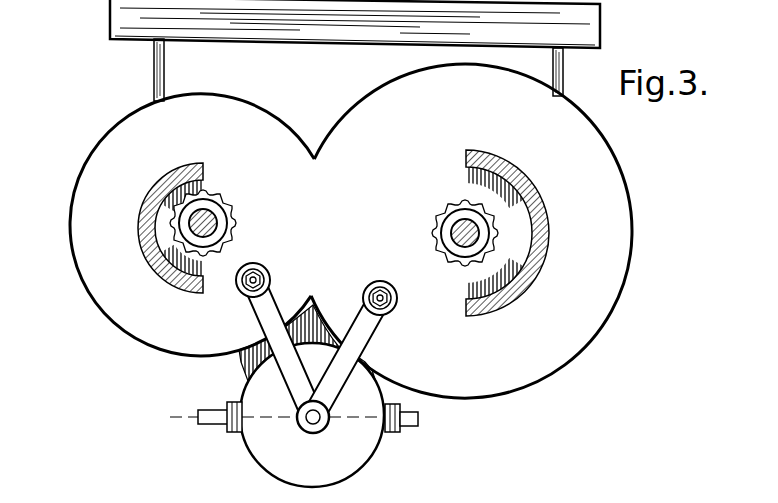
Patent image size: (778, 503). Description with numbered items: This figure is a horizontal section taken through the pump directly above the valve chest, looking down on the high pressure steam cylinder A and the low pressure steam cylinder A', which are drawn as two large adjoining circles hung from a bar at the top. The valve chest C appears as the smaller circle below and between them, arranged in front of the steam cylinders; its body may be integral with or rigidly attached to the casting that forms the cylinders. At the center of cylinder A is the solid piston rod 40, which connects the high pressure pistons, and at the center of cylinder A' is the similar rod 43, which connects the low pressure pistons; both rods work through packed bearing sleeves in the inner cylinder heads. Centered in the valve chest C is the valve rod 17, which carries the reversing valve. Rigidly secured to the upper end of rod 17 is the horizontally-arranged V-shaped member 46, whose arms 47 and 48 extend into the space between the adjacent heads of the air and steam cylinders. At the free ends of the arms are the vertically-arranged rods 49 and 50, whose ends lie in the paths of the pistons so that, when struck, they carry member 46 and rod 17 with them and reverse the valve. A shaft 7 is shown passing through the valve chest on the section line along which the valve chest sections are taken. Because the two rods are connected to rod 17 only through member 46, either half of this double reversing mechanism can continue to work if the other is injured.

The high pressure steam cylinder A is at (173, 225).
The low pressure steam cylinder A' is at (473, 231).
The shaft 7 is at (199, 415).
The valve rod 17 is at (330, 418).
The piston rod 40 is at (211, 220).
The piston rod 43 is at (454, 231).
The V-shaped member 46 is at (293, 381).
The arm 47 is at (279, 309).
The arm 48 is at (368, 345).
The rod 49 is at (258, 271).
The rod 50 is at (397, 298).
The valve chest C is at (362, 458).